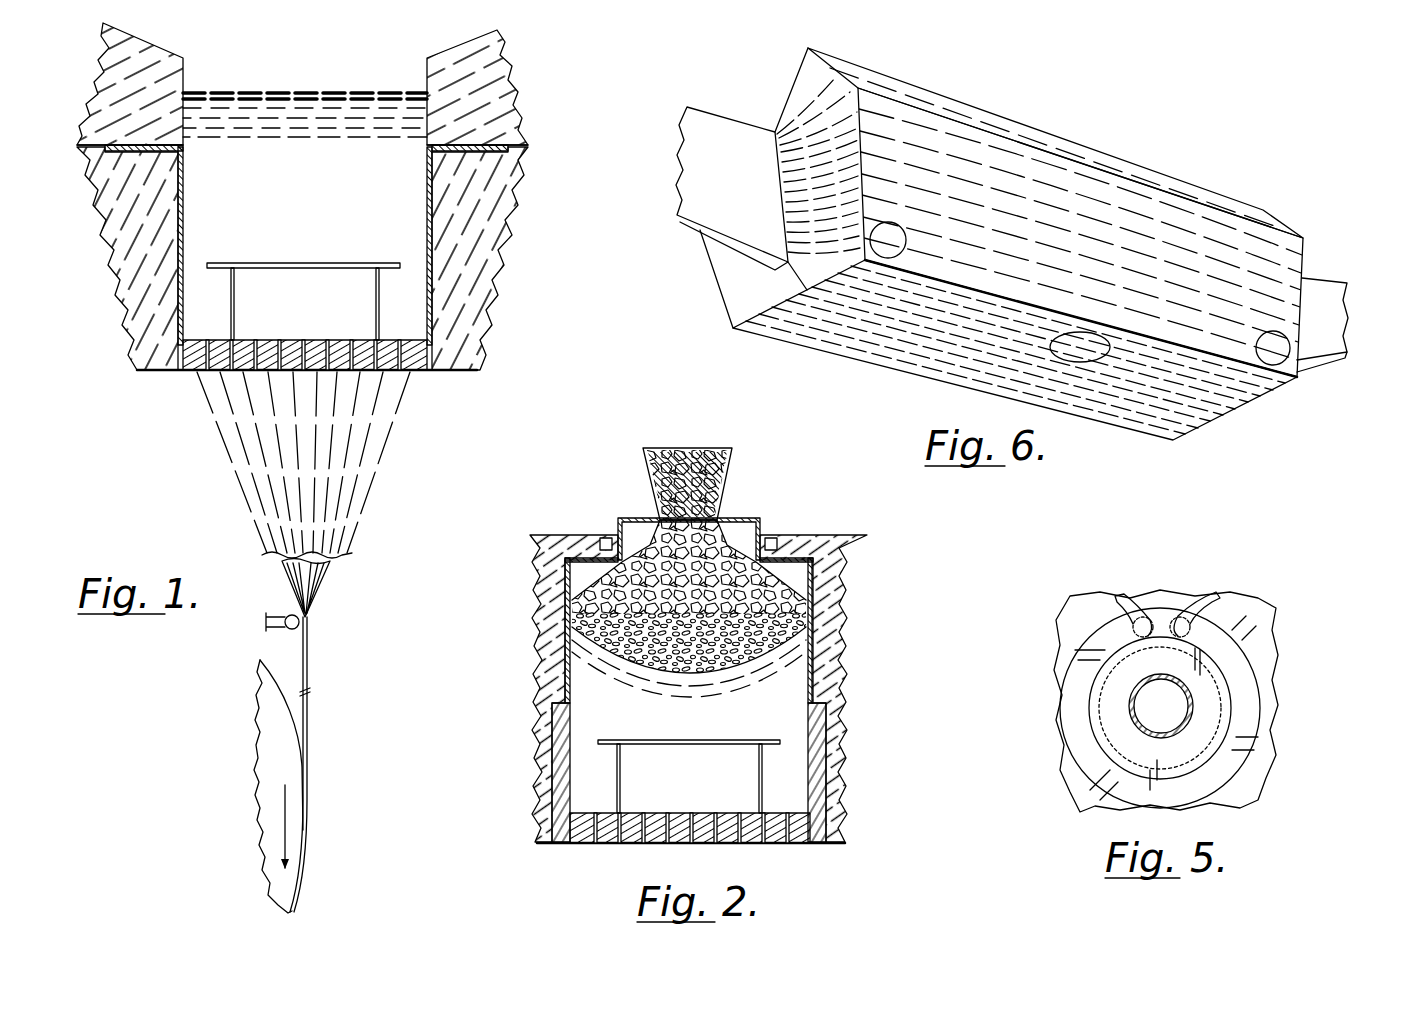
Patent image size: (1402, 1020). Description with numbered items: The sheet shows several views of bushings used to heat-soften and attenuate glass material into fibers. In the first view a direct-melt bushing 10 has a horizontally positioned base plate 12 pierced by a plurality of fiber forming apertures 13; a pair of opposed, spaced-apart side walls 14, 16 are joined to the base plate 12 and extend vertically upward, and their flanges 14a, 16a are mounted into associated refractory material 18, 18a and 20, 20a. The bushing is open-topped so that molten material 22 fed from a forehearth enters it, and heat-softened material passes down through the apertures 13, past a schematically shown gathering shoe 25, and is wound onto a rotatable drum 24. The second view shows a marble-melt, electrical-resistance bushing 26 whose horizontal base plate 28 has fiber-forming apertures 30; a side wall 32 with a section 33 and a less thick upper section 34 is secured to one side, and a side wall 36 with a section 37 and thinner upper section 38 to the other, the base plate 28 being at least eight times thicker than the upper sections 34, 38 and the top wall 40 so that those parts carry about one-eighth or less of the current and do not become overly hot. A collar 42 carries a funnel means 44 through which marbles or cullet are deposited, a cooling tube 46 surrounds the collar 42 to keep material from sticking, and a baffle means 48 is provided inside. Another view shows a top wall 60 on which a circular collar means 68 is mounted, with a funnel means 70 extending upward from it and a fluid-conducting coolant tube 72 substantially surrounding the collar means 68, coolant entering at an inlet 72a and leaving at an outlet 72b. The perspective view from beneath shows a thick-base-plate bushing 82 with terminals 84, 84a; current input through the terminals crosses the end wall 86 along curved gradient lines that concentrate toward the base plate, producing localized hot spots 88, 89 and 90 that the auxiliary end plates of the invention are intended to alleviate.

In FIG. 1, the bushing 10 is at (178, 436).
In FIG. 1, the base plate 12 is at (254, 340).
In FIG. 1, the fiber forming apertures 13 is at (330, 342).
In FIG. 1, the side wall 14 is at (187, 208).
In FIG. 1, the flange 14a is at (150, 152).
In FIG. 1, the side wall 16 is at (425, 205).
In FIG. 1, the flange 16a is at (440, 154).
In FIG. 1, the refractory material 18 is at (113, 215).
In FIG. 1, the refractory material 18a is at (120, 113).
In FIG. 1, the refractory material 20 is at (482, 255).
In FIG. 1, the refractory material 20a is at (497, 102).
In FIG. 1, the molten material 22 is at (286, 100).
In FIG. 1, the rotatable drum 24 is at (263, 722).
In FIG. 1, the gathering shoe 25 is at (292, 612).
In FIG. 2, the bushing 26 is at (577, 500).
In FIG. 2, the base plate 28 is at (638, 813).
In FIG. 2, the fiber-forming apertures 30 is at (722, 813).
In FIG. 2, the side wall 32 is at (556, 666).
In FIG. 2, the section 33 is at (562, 736).
In FIG. 2, the upper section 34 is at (573, 648).
In FIG. 2, the side wall 36 is at (823, 664).
In FIG. 2, the section 37 is at (815, 726).
In FIG. 2, the upper section 38 is at (803, 645).
In FIG. 2, the top wall 40 is at (790, 560).
In FIG. 2, the collar 42 is at (752, 536).
In FIG. 2, the funnel means 44 is at (735, 463).
In FIG. 2, the cooling tube 46 is at (606, 538).
In FIG. 2, the baffle means 48 is at (682, 740).
In FIG. 5, the top wall 60 is at (1268, 740).
In FIG. 5, the collar means 68 is at (1225, 742).
In FIG. 5, the funnel means 70 is at (1152, 680).
In FIG. 5, the coolant tube 72 is at (1235, 660).
In FIG. 5, the inlet 72a is at (1128, 598).
In FIG. 5, the outlet 72b is at (1208, 596).
In FIG. 6, the bushing 82 is at (1172, 156).
In FIG. 6, the terminal 84 is at (720, 146).
In FIG. 6, the terminal 84a is at (1328, 278).
In FIG. 6, the end wall 86 is at (765, 111).
In FIG. 6, the hot spot 88 is at (992, 282).
In FIG. 6, the hot spot 89 is at (1295, 365).
In FIG. 6, the hot spot 90 is at (1105, 362).